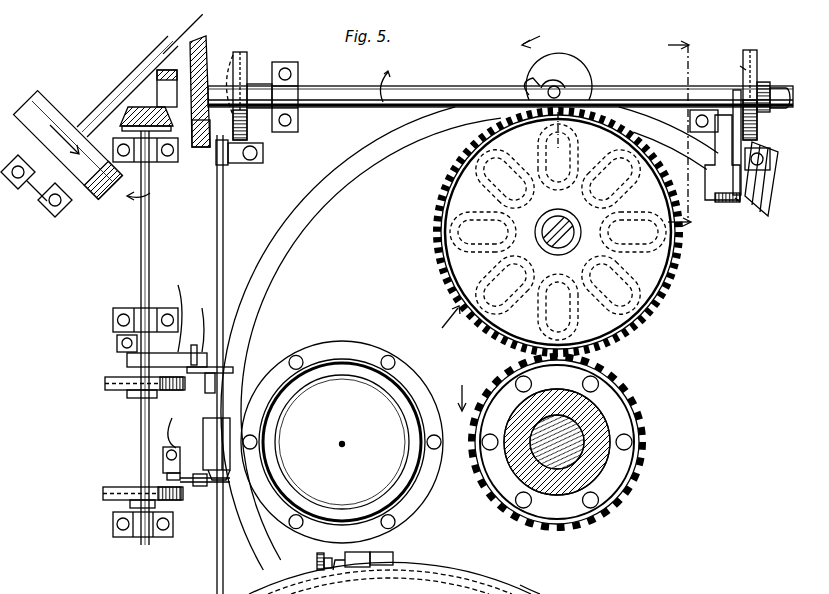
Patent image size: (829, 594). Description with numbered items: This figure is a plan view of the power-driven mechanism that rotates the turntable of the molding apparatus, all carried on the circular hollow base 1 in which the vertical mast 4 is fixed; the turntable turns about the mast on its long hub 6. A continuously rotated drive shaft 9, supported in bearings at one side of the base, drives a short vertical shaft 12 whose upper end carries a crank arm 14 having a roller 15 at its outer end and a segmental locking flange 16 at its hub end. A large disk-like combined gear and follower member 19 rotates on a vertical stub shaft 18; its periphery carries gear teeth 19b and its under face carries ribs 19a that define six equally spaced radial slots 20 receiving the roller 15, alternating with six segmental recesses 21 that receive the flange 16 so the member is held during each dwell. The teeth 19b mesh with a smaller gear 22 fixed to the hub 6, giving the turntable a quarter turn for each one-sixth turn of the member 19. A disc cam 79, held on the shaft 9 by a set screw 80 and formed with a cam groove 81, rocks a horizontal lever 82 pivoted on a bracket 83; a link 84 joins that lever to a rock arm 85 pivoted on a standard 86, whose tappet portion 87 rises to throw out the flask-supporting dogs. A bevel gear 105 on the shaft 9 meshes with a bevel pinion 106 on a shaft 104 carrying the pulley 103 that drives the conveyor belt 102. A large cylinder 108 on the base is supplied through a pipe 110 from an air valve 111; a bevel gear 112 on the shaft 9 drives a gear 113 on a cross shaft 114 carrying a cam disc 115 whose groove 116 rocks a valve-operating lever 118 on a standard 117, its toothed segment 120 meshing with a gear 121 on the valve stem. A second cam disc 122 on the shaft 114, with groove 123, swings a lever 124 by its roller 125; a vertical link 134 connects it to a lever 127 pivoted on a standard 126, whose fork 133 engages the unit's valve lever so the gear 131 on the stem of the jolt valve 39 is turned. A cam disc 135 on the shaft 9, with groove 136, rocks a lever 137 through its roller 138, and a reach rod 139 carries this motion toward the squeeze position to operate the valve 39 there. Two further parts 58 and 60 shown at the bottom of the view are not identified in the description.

The base 1 is at (333, 195).
The column or mast 4 is at (568, 437).
The hub portion 6 is at (505, 395).
The shaft 9 is at (374, 92).
The short vertical shaft 12 is at (556, 86).
The crank arm 14 is at (531, 87).
The roller 15 is at (472, 118).
The segmental locking flange 16 is at (582, 82).
The stub shaft 18 is at (546, 235).
The combined gear and follower member 19 is at (552, 236).
The ribs 19a is at (562, 140).
The gear teeth 19b is at (662, 308).
The radial slots 20 is at (440, 275).
The segmental recesses 21 is at (443, 192).
The gear 22 is at (569, 442).
The valve 39 is at (390, 560).
The gear 58 is at (450, 573).
The gear teeth 60 is at (532, 591).
The disc cam 79 is at (752, 52).
The set screw 80 is at (772, 84).
The cam groove 81 is at (746, 68).
The horizontal lever 82 is at (736, 95).
The bracket 83 is at (760, 172).
The link 84 is at (738, 200).
The rock arm 85 is at (748, 150).
The standard 86 is at (700, 116).
The tappet portion 87 is at (718, 202).
The belt 102 is at (59, 190).
The pulley 103 is at (57, 122).
The shaft 104 is at (157, 58).
The bevel gear 105 is at (200, 150).
The bevel pinion 106 is at (168, 24).
The cylinder 108 is at (342, 436).
The pipe 110 is at (343, 440).
The air valve 111 is at (205, 440).
The bevel gear 112 is at (153, 115).
The gear 113 is at (136, 106).
The shaft 114 is at (141, 262).
The cam disc 115 is at (118, 501).
The cam groove 116 is at (125, 488).
The standard 117 is at (163, 455).
The valve-operating lever 118 is at (174, 424).
The toothed segment 120 is at (188, 486).
The gear 121 is at (258, 528).
The cam disc 122 is at (105, 382).
The cam groove 123 is at (107, 394).
The lever 124 is at (209, 332).
The roller 125 is at (135, 365).
The standard 126 is at (120, 338).
The lever 127 is at (174, 311).
The gear 131 is at (314, 562).
The fork 133 is at (192, 352).
The vertical link 134 is at (205, 385).
The cam disc 135 is at (246, 55).
The cam groove 136 is at (258, 64).
The lever 137 is at (222, 178).
The roller 138 is at (232, 82).
The reach rod 139 is at (225, 240).